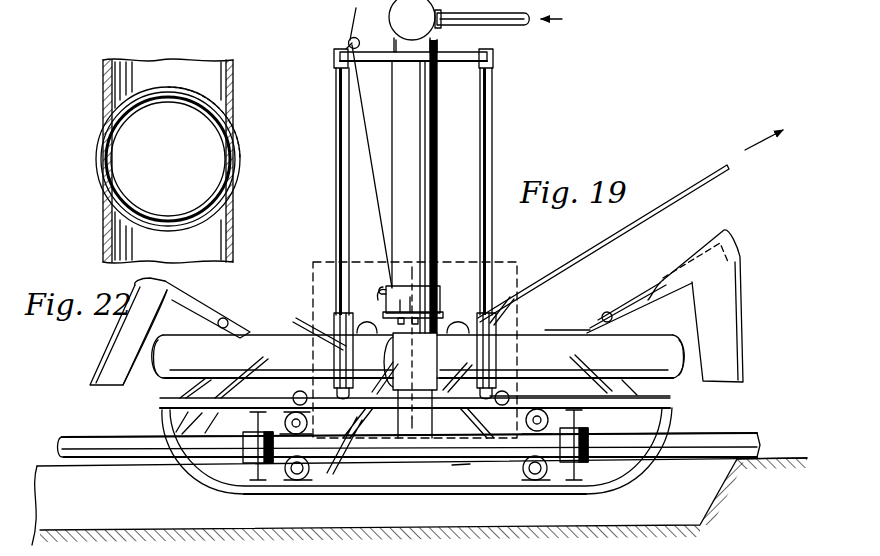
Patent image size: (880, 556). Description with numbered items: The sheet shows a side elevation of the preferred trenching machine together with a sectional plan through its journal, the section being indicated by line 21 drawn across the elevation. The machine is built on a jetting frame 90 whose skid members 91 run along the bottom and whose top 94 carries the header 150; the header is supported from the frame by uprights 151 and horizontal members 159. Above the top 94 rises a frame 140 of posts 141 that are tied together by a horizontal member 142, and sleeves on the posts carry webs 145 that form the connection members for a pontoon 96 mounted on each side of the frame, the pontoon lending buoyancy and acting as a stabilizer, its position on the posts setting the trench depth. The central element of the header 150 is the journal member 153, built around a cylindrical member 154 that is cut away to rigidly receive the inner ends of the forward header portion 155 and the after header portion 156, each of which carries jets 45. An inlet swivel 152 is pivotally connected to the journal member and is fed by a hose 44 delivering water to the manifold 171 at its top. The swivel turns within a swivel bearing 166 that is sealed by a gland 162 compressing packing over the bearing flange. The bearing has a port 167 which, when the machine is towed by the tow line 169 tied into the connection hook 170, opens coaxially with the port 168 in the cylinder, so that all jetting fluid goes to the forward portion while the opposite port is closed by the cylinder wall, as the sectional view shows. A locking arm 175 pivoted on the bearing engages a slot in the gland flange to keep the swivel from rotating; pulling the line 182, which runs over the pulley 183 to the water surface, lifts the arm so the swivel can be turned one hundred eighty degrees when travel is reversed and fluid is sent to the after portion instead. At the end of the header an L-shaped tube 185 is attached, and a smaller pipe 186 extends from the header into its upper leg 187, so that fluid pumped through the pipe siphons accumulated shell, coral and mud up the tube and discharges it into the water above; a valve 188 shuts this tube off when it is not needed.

In FIG. 19, the section line 21 is at (412, 270).
In FIG. 19, the hose 44 is at (512, 26).
In FIG. 19, the jets 45 is at (358, 430).
In FIG. 19, the frame 90 is at (287, 392).
In FIG. 19, the skid members 91 is at (368, 484).
In FIG. 19, the top of the frame 94 is at (547, 397).
In FIG. 19, the pontoon 96 is at (508, 263).
In FIG. 19, the frame 140 is at (494, 95).
In FIG. 19, the posts 141 is at (490, 180).
In FIG. 19, the horizontal member 142 is at (443, 66).
In FIG. 19, the webs 145 is at (324, 322).
In FIG. 19, the header 150 is at (572, 306).
In FIG. 19, the uprights 151 is at (457, 466).
In FIG. 19, the inlet swivel 152 is at (438, 192).
In FIG. 19, the journal member 153 is at (423, 352).
In FIG. 22, the journal member 153 is at (97, 163).
In FIG. 22, the cylindrical member 154 is at (205, 203).
In FIG. 19, the forward header portion 155 is at (596, 353).
In FIG. 22, the forward header portion 155 is at (182, 68).
In FIG. 19, the after header portion 156 is at (232, 353).
In FIG. 22, the after header portion 156 is at (212, 248).
In FIG. 19, the horizontal members 159 is at (503, 404).
In FIG. 19, the gland 162 is at (393, 283).
In FIG. 19, the swivel bearing 166 is at (405, 298).
In FIG. 22, the port 167 is at (137, 108).
In FIG. 22, the port 168 is at (167, 98).
In FIG. 19, the tow line 169 is at (697, 180).
In FIG. 19, the connection hook 170 is at (470, 318).
In FIG. 19, the manifold 171 is at (412, 26).
In FIG. 19, the locking arm 175 is at (386, 299).
In FIG. 19, the line 182 is at (365, 148).
In FIG. 19, the pulley 183 is at (351, 37).
In FIG. 19, the L-shaped tube 185 is at (712, 323).
In FIG. 19, the pipe 186 is at (647, 294).
In FIG. 19, the upper leg 187 is at (706, 243).
In FIG. 19, the valve 188 is at (620, 320).